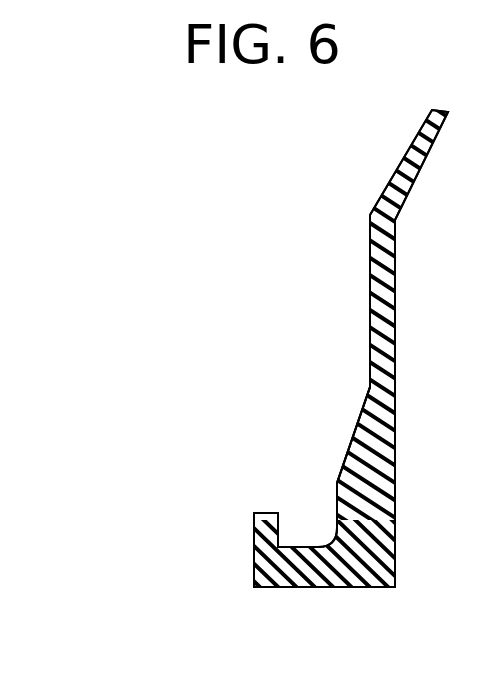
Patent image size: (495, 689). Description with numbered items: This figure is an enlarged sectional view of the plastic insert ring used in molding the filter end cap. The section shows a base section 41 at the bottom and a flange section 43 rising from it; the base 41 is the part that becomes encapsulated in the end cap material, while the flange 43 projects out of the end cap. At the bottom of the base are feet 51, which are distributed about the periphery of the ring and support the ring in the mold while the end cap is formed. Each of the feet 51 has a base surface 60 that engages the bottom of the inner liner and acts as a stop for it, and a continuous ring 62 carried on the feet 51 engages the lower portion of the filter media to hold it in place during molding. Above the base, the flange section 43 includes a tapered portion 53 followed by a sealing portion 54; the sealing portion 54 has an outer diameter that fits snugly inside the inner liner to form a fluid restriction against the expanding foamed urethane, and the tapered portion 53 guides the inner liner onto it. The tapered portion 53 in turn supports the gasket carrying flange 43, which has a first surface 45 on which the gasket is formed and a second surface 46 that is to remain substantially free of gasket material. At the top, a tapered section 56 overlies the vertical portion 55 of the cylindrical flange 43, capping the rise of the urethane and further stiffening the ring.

The base section 41 is at (180, 520).
The flange section 43 is at (334, 240).
The first surface 45 is at (395, 283).
The second surface 46 is at (370, 283).
The feet 51 is at (350, 573).
The tapered portion 53 is at (360, 414).
The sealing portion 54 is at (336, 487).
The vertical portion 55 is at (368, 213).
The tapered section 56 is at (407, 152).
The base surface 60 is at (302, 547).
The continuous ring 62 is at (267, 513).